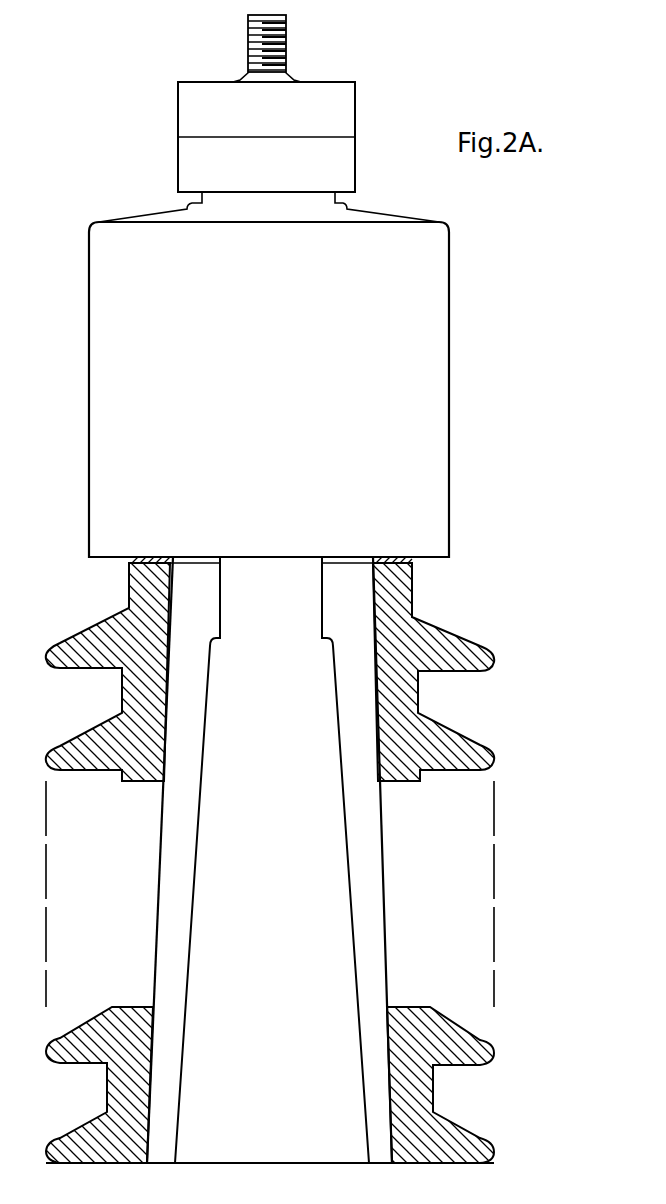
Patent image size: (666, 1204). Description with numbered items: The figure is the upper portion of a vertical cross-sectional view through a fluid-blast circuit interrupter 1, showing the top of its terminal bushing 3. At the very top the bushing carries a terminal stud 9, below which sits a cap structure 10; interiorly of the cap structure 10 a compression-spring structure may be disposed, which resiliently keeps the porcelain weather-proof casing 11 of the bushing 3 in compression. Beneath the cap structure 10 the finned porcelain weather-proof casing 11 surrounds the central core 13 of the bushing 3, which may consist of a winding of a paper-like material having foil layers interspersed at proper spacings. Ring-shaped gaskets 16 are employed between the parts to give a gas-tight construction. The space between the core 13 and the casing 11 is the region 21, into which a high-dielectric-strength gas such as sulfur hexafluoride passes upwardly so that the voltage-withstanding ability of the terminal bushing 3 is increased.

The circuit interrupter 1 is at (106, 107).
The terminal bushing 3 is at (526, 391).
The terminal stud 9 is at (286, 45).
The cap structure 10 is at (449, 331).
The porcelain weather-proof casing 11 is at (478, 746).
The central core 13 is at (330, 850).
The ring-shaped gasket 16 is at (412, 560).
The region 21 is at (192, 718).